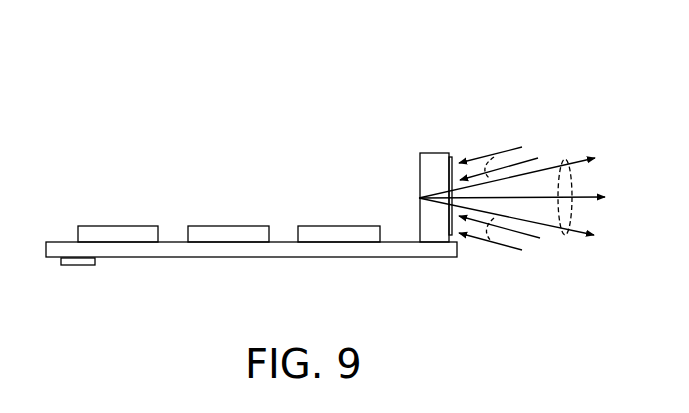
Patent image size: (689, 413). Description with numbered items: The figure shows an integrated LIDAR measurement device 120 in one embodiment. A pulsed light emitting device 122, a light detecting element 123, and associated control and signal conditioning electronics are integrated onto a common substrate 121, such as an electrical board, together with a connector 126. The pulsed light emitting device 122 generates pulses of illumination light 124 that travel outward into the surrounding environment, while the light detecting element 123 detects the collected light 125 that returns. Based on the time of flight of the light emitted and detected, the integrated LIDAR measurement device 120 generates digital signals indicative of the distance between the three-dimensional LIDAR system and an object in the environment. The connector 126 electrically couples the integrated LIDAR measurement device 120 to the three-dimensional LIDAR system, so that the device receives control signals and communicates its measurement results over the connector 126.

The integrated LIDAR measurement device 120 is at (108, 86).
The common substrate 121 is at (160, 258).
The pulsed light emitting device 122 is at (418, 198).
The light detecting element 123 is at (437, 152).
The illumination light 124 is at (564, 160).
The collected light 125 is at (486, 154).
The connector 126 is at (78, 266).